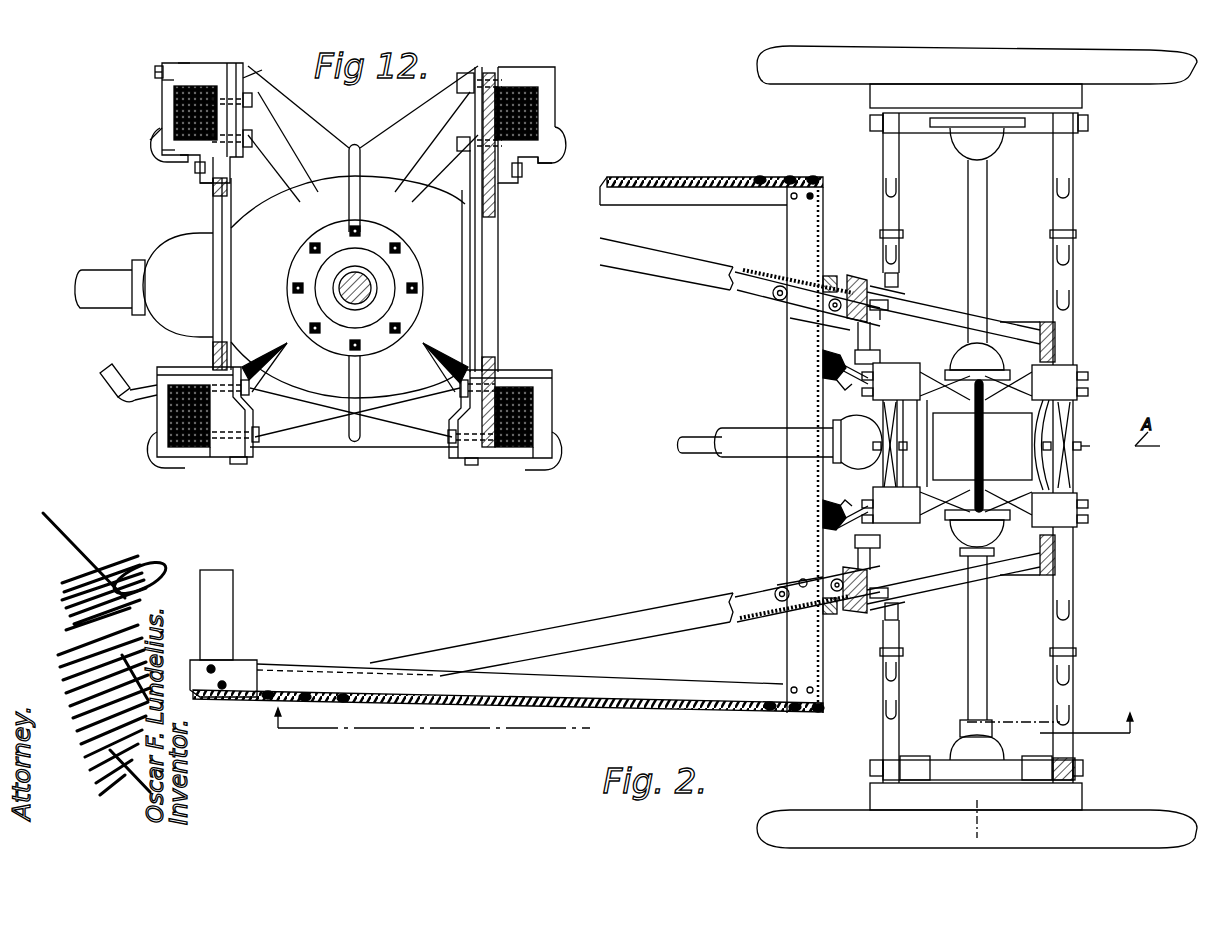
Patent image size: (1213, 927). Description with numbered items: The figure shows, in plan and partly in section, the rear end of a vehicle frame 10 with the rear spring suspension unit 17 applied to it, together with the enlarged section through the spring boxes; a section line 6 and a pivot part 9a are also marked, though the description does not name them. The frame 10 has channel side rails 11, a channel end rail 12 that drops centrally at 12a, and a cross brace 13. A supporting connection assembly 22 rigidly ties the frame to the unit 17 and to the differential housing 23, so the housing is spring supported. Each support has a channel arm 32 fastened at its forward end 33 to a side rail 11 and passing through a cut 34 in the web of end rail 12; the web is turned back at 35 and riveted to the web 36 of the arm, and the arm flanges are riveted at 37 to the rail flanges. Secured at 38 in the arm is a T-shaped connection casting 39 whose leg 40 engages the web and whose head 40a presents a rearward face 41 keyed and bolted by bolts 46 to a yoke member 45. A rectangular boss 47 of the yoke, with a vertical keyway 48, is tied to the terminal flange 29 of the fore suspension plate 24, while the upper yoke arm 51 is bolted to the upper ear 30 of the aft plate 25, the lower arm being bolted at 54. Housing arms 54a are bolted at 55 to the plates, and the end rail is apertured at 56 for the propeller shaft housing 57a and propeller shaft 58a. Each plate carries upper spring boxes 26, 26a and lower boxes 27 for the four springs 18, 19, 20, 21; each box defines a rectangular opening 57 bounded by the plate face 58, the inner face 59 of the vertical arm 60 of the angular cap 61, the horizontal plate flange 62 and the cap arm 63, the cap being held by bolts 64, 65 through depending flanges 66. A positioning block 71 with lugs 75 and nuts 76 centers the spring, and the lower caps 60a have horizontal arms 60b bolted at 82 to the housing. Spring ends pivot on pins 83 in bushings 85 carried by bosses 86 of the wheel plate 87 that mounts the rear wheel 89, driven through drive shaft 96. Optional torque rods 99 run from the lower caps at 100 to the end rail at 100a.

In FIG. 2, the section line 6 is at (706, 734).
In FIG. 2, the pivot dome 9a is at (979, 136).
In FIG. 2, the frame 10 is at (248, 660).
In FIG. 2, the channel side rails 11 is at (672, 182).
In FIG. 2, the channel end rail 12 is at (787, 350).
In FIG. 2, the central drop of end rail 12a is at (860, 290).
In FIG. 2, the cross brace 13 is at (222, 615).
In FIG. 2, the rear spring suspension unit 17 is at (1080, 355).
In FIG. 12, the spring 18 is at (170, 92).
In FIG. 2, the spring 18 is at (895, 222).
In FIG. 12, the spring 19 is at (540, 104).
In FIG. 2, the spring 19 is at (1073, 230).
In FIG. 12, the spring 20 is at (168, 420).
In FIG. 12, the spring 21 is at (540, 401).
In FIG. 2, the supporting connection assembly 22 is at (980, 585).
In FIG. 12, the differential housing 23 is at (348, 311).
In FIG. 2, the differential housing 23 is at (982, 446).
In FIG. 12, the fore suspension plate 24 is at (213, 197).
In FIG. 2, the fore suspension plate 24 is at (917, 462).
In FIG. 12, the aft suspension plate 25 is at (496, 214).
In FIG. 2, the aft suspension plate 25 is at (1035, 448).
In FIG. 12, the upper spring box 26 is at (221, 69).
In FIG. 2, the upper spring box 26 is at (975, 507).
In FIG. 2, the upper spring box 26a is at (975, 381).
In FIG. 12, the lower spring box 27 is at (177, 370).
In FIG. 2, the terminal flange 29 is at (910, 350).
In FIG. 2, the upper ear 30 is at (1056, 330).
In FIG. 2, the channel arm 32 is at (707, 266).
In FIG. 2, the forward end of arm 33 is at (290, 688).
In FIG. 2, the cut 34 is at (790, 318).
In FIG. 2, the turned back web portion 35 is at (830, 276).
In FIG. 2, the web of arm 36 is at (752, 270).
In FIG. 2, the rivets 37 is at (777, 585).
In FIG. 2, the securing point 38 is at (786, 282).
In FIG. 2, the connection casting 39 is at (812, 605).
In FIG. 2, the leg of casting 40 is at (760, 290).
In FIG. 2, the head of casting 40a is at (845, 665).
In FIG. 2, the rearward face 41 is at (860, 285).
In FIG. 2, the yoke member 45 is at (962, 312).
In FIG. 2, the bolts 46 is at (885, 308).
In FIG. 2, the rectangular boss 47 is at (925, 330).
In FIG. 2, the keyway 48 is at (908, 328).
In FIG. 2, the upper yoke arm 51 is at (1020, 448).
In FIG. 12, the bolting point 54 is at (349, 427).
In FIG. 12, the housing arms 54a is at (412, 118).
In FIG. 12, the bolts 55 is at (255, 91).
In FIG. 2, the aperture 56 is at (757, 475).
In FIG. 12, the rectangular opening 57 is at (191, 88).
In FIG. 2, the propeller shaft housing 57a is at (778, 441).
In FIG. 12, the forward face of plate 58 is at (246, 80).
In FIG. 2, the propeller shaft 58a is at (695, 452).
In FIG. 12, the inner face of cap arm 59 is at (152, 140).
In FIG. 12, the vertical arm of cap 60 is at (160, 80).
In FIG. 12, the lower box cap 60a is at (180, 463).
In FIG. 12, the horizontal arm of lower cap 60b is at (208, 462).
In FIG. 12, the angular cap 61 is at (158, 64).
In FIG. 12, the horizontal plate flange 62 is at (183, 64).
In FIG. 12, the horizontal arm of cap 63 is at (172, 151).
In FIG. 12, the bolt 64 is at (155, 68).
In FIG. 12, the bolt 65 is at (195, 168).
In FIG. 12, the depending cap flanges 66 is at (200, 183).
In FIG. 2, the positioning block 71 is at (886, 462).
In FIG. 2, the lugs 75 is at (1094, 438).
In FIG. 2, the nuts 76 is at (1082, 450).
In FIG. 12, the bolting point 82 is at (244, 464).
In FIG. 2, the pin 83 is at (1083, 770).
In FIG. 2, the bushings 85 is at (1075, 762).
In FIG. 2, the bosses 86 is at (910, 758).
In FIG. 2, the wheel plate 87 is at (945, 780).
In FIG. 2, the rear wheel 89 is at (977, 447).
In FIG. 2, the drive shaft 96 is at (987, 208).
In FIG. 12, the torque rod 99 is at (100, 380).
In FIG. 2, the torque rod 99 is at (841, 445).
In FIG. 12, the lower end of torque rod 100 is at (150, 403).
In FIG. 2, the upper end of torque rod 100a is at (808, 380).